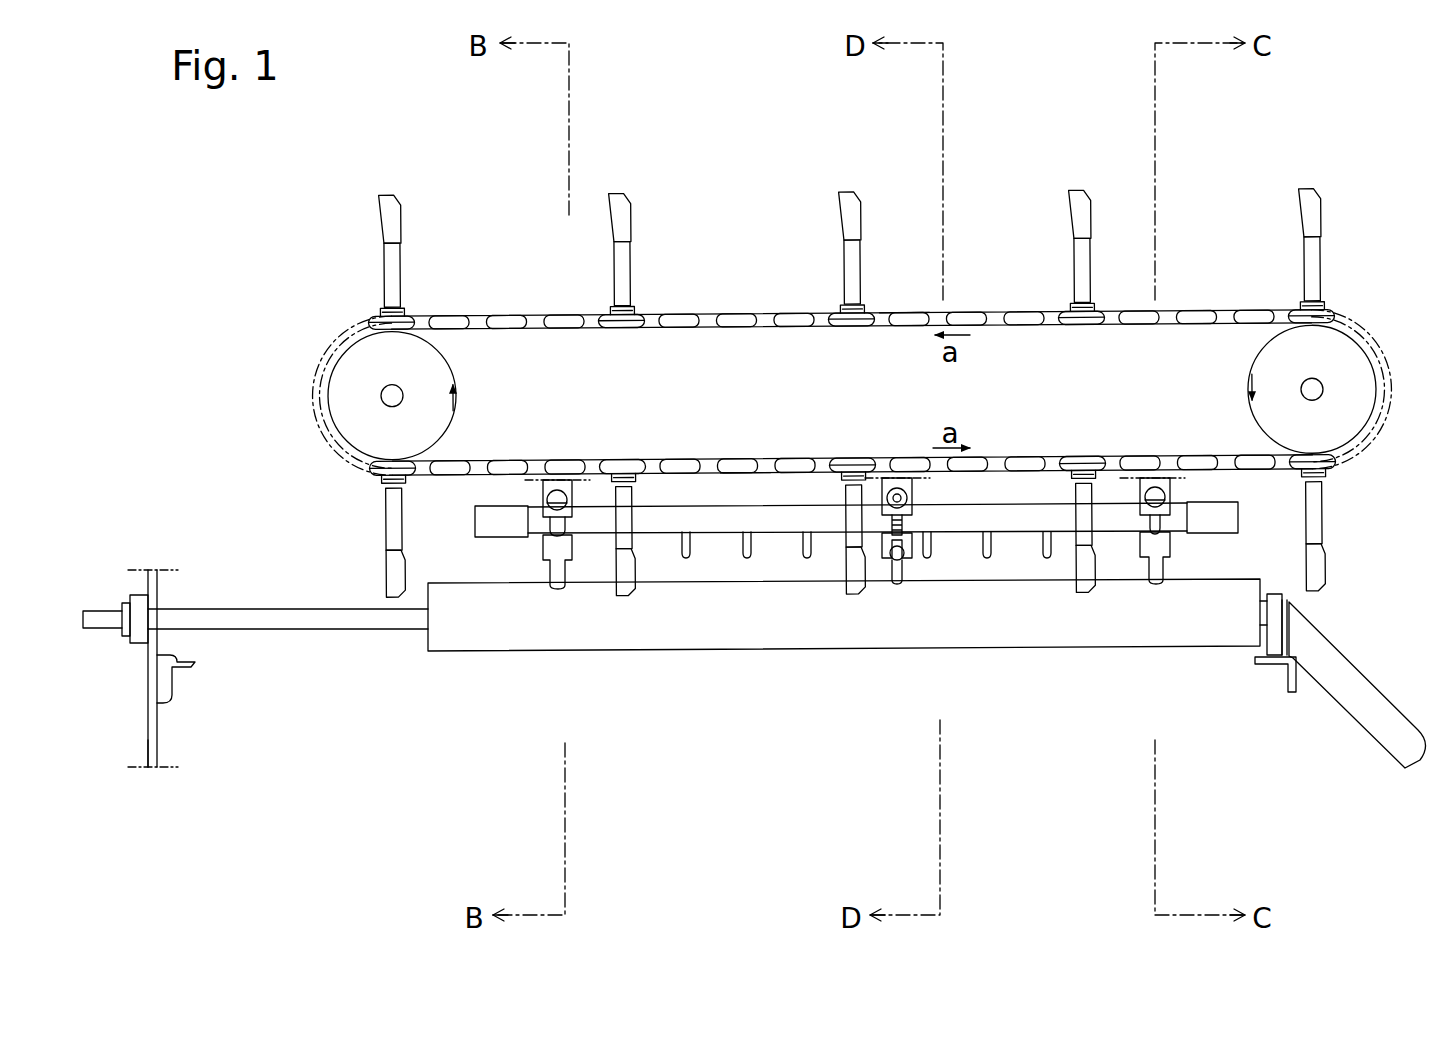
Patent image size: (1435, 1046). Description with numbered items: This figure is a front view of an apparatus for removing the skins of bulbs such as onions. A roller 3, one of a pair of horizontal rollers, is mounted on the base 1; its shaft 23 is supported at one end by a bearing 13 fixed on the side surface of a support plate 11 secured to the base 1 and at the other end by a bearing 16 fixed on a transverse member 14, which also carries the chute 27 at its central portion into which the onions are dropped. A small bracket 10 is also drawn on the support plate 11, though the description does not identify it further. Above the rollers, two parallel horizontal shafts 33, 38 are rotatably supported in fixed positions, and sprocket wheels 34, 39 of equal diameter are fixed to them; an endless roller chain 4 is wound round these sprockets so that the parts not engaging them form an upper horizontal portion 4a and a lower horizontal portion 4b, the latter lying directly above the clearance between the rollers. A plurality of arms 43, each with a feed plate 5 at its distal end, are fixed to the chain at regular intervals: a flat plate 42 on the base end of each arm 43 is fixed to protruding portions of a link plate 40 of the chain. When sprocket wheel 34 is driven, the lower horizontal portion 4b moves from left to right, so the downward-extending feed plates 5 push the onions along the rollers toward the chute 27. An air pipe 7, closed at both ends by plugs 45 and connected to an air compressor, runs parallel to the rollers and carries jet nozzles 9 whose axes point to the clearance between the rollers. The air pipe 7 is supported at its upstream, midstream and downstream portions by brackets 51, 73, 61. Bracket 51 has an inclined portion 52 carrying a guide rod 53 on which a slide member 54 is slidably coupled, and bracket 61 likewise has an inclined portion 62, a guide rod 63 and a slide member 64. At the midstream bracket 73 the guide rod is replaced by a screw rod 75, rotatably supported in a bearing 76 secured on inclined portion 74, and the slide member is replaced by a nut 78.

The base 1 is at (152, 690).
The roller 3 is at (560, 652).
The endless roller chain 4 is at (700, 318).
The upper horizontal portion 4a is at (905, 318).
The lower horizontal portion 4b is at (740, 470).
The feed plate 5 is at (397, 215).
The air pipe 7 is at (688, 520).
The jet nozzle 9 is at (687, 548).
The bracket 10 is at (175, 660).
The support plate 11 is at (152, 740).
The bearing 13 is at (138, 610).
The transverse member 14 is at (1292, 660).
The bearing 16 is at (1276, 625).
The shaft 23 is at (298, 620).
The chute 27 is at (1355, 700).
The shaft 33 is at (388, 397).
The sprocket wheel 34 is at (318, 375).
The shaft 38 is at (1320, 395).
The sprocket wheel 39 is at (1393, 365).
The link plate 40 is at (388, 322).
The flat plate 42 is at (401, 305).
The arm 43 is at (393, 268).
The plug 45 is at (500, 522).
The bracket 51 is at (557, 478).
The inclined portion 52 is at (553, 508).
The guide rod 53 is at (548, 562).
The slide member 54 is at (560, 540).
The bracket 61 is at (1152, 476).
The inclined portion 62 is at (1162, 508).
The guide rod 63 is at (1156, 562).
The slide member 64 is at (1150, 528).
The bracket 73 is at (898, 476).
The inclined portion 74 is at (910, 502).
The screw rod 75 is at (896, 562).
The bearing 76 is at (892, 522).
The nut 78 is at (901, 578).